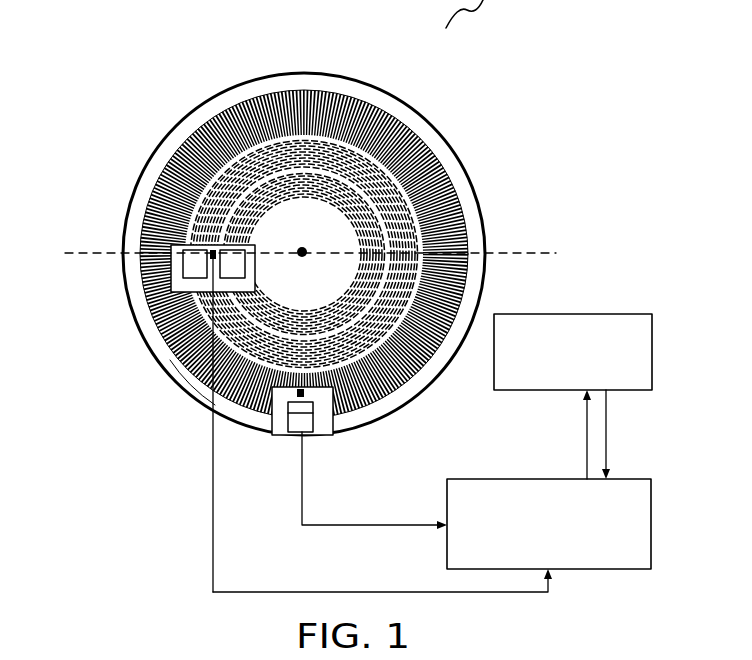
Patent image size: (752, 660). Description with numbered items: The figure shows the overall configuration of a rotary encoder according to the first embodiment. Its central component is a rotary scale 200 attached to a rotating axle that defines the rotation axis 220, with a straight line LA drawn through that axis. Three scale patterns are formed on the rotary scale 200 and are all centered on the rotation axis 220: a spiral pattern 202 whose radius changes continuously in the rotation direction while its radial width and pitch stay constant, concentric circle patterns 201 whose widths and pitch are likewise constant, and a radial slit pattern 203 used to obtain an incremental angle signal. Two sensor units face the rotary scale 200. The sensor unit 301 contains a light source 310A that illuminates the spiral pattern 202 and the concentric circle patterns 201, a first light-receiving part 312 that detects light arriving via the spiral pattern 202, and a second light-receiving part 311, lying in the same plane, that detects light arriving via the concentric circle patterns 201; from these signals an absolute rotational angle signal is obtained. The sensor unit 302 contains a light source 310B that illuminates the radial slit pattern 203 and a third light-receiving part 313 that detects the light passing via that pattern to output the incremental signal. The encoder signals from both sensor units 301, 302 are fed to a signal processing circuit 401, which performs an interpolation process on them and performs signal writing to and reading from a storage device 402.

The rotary scale 200 is at (469, 180).
The concentric circle patterns 201 is at (312, 138).
The spiral pattern 202 is at (247, 97).
The radial slit pattern 203 is at (388, 110).
The rotation axis 220 is at (304, 250).
The straight line LA is at (508, 253).
The sensor unit 301 is at (155, 374).
The sensor unit 302 is at (358, 458).
The light source 310A is at (177, 367).
The light source 310B is at (305, 394).
The second light-receiving part 311 is at (237, 273).
The first light-receiving part 312 is at (192, 268).
The third light-receiving part 313 is at (302, 420).
The signal processing circuit 401 is at (631, 479).
The storage device 402 is at (641, 314).